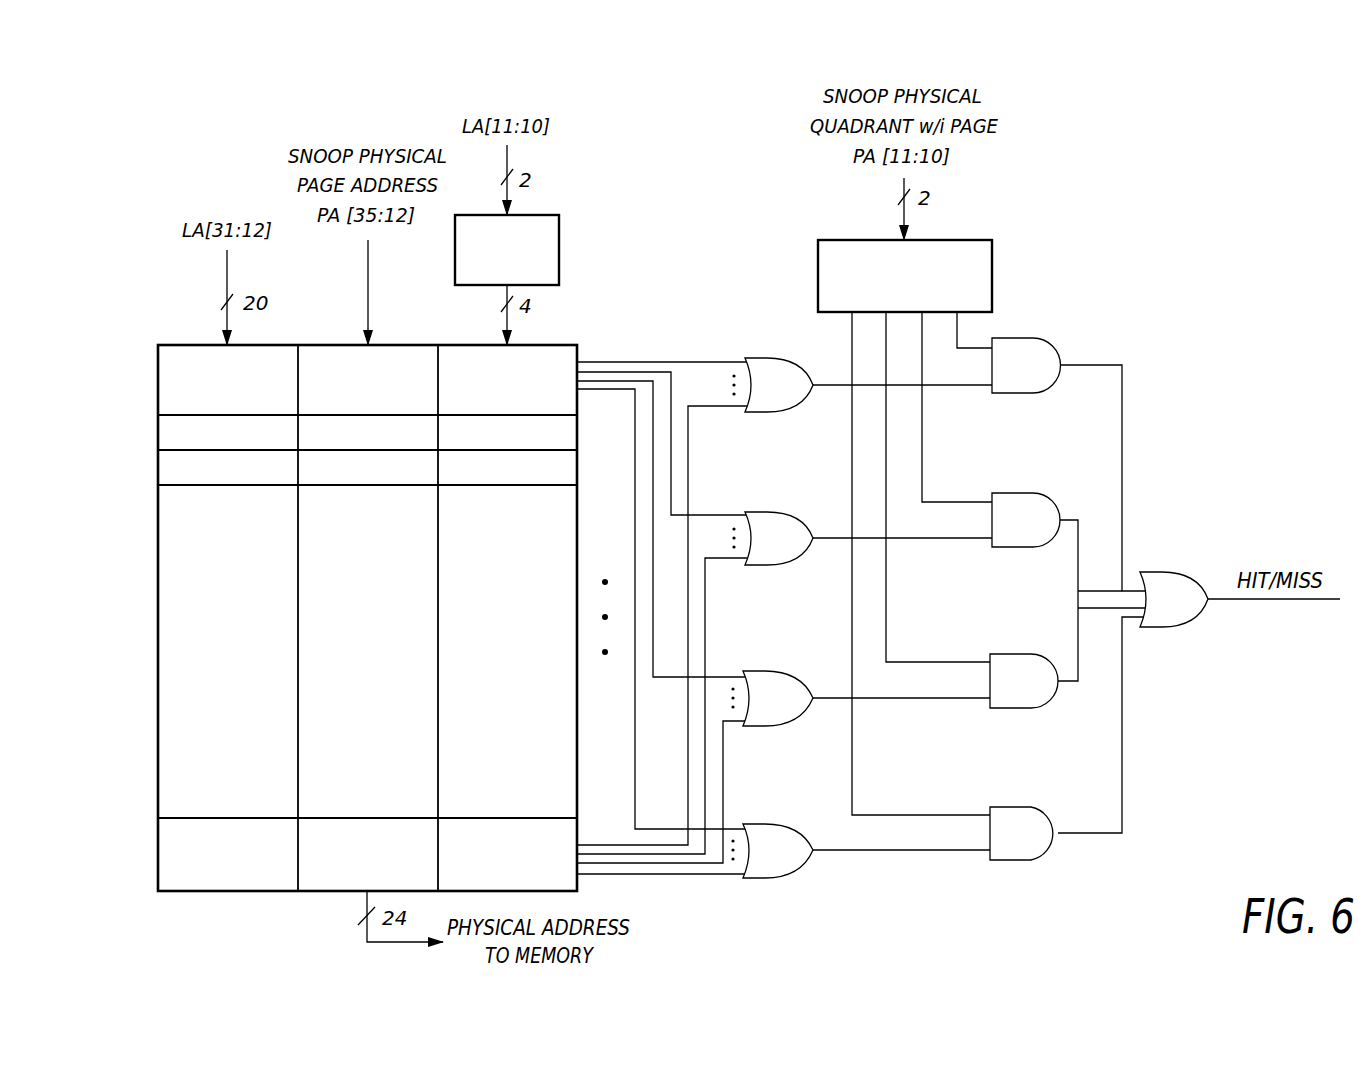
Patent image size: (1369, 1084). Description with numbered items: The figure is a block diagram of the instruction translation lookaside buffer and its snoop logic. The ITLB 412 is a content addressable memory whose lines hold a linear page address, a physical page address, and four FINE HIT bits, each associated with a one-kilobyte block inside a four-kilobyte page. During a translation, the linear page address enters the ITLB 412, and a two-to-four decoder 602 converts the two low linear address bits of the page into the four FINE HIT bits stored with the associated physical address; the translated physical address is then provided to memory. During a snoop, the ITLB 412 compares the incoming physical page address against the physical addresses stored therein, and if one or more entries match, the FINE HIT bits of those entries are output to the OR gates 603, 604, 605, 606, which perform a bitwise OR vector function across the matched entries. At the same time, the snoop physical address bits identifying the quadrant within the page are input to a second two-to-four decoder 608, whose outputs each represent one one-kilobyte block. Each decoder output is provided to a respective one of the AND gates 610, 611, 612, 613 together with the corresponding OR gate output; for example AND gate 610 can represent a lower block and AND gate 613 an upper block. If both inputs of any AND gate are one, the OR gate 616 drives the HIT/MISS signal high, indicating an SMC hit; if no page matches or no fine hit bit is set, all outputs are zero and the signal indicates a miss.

The instruction translation lookaside buffer (ITLB) 412 is at (158, 345).
The 2-to-4 decoder 602 is at (559, 247).
The OR gate 603 is at (801, 357).
The OR gate 604 is at (801, 511).
The OR gate 605 is at (800, 670).
The OR gate 606 is at (800, 823).
The 2 to 4 decoder 608 is at (992, 248).
The AND gate 610 is at (1050, 340).
The AND gate 611 is at (1050, 494).
The AND gate 612 is at (1048, 702).
The AND gate 613 is at (1048, 854).
The OR gate 616 is at (1194, 572).